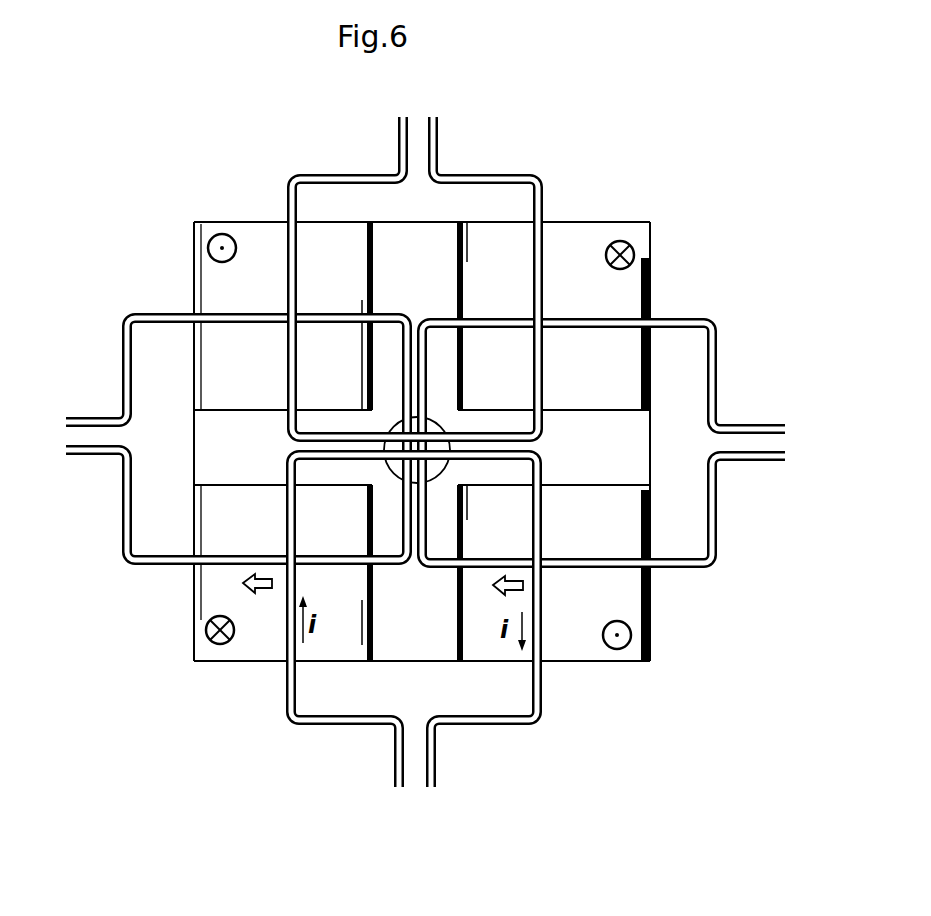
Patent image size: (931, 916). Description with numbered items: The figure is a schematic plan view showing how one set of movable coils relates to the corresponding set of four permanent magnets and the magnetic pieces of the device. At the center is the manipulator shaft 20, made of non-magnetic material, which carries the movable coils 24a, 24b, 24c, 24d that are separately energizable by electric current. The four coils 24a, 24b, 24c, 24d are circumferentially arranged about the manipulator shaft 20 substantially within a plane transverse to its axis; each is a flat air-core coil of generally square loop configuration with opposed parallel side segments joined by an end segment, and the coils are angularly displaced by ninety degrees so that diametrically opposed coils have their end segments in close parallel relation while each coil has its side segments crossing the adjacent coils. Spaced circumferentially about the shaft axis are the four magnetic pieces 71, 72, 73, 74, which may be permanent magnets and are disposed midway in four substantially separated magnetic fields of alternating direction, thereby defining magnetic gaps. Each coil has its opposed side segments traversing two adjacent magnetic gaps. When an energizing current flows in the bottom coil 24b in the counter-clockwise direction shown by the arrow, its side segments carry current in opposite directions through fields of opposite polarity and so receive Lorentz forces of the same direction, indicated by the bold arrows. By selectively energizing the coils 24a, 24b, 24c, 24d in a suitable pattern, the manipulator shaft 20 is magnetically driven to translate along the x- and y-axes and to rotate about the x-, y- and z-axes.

The manipulator shaft 20 is at (440, 428).
The movable coil 24a is at (120, 500).
The movable coil 24b is at (327, 717).
The movable coil 24c is at (713, 533).
The movable coil 24d is at (517, 177).
The magnetic piece 71 is at (245, 648).
The magnetic piece 72 is at (645, 623).
The magnetic piece 73 is at (633, 285).
The magnetic piece 74 is at (197, 267).